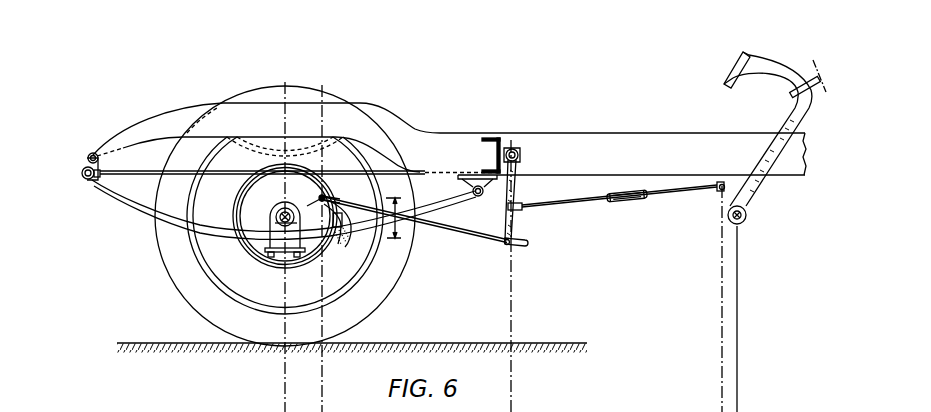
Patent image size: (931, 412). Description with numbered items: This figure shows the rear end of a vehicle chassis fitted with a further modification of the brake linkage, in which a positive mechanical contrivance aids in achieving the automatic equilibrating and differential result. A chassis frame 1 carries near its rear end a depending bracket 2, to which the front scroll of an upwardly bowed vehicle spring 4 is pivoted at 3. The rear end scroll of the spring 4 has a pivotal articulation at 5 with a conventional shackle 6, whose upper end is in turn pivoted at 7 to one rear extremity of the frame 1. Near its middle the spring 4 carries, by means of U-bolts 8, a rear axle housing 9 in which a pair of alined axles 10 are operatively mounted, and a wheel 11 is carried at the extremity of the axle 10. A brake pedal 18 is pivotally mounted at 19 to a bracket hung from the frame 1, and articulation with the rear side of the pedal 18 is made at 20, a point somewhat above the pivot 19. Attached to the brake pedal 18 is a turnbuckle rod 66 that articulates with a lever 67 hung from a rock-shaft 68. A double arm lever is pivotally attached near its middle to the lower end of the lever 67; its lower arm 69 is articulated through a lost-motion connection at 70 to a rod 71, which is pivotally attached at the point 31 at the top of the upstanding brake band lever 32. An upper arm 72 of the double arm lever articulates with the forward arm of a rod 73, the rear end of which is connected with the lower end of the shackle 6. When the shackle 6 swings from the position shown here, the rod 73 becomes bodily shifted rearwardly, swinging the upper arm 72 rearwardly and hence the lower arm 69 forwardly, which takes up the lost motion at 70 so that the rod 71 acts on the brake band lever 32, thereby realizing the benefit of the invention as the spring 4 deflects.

The chassis frame 1 is at (148, 121).
The depending bracket 2 is at (476, 177).
The pivot of front spring scroll 3 is at (479, 197).
The vehicle spring 4 is at (143, 218).
The pivotal articulation of rear spring scroll 5 is at (87, 180).
The shackle 6 is at (85, 162).
The shackle pivot 7 is at (93, 152).
The U-bolts 8 is at (268, 262).
The rear axle housing 9 is at (283, 206).
The axle 10 is at (272, 215).
The wheel 11 is at (180, 285).
The brake pedal 18 is at (783, 123).
The pedal pivot 19 is at (747, 218).
The articulation point on pedal 20 is at (721, 182).
The articulation at top of brake band lever 31 is at (326, 197).
The brake band lever 32 is at (350, 248).
The turnbuckle rod 66 is at (675, 196).
The lever 67 is at (519, 164).
The rock-shaft 68 is at (515, 149).
The lower arm 69 is at (515, 221).
The lost-motion connection 70 is at (506, 246).
The rod 71 is at (463, 236).
The upper arm 72 is at (518, 186).
The rod 73 is at (142, 171).